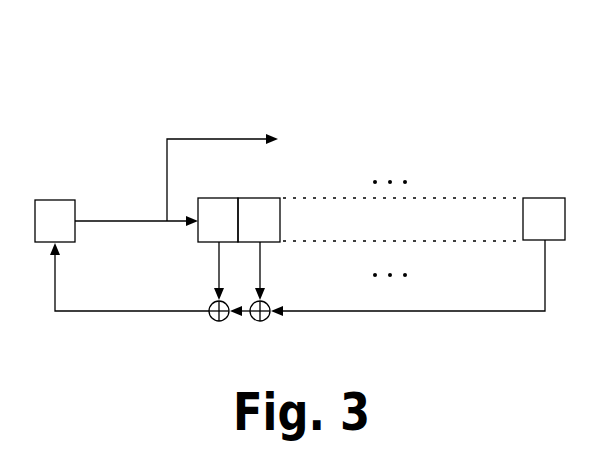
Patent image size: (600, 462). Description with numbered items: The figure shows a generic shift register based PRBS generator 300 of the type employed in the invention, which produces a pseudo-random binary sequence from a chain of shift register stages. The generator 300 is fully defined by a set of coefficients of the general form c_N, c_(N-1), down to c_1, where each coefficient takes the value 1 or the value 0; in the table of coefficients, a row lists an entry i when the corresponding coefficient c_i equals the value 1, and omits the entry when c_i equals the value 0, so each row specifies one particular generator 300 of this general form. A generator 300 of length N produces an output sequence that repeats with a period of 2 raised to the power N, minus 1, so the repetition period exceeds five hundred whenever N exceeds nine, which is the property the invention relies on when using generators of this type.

The shift register based PRBS generator 300 is at (300, 180).
The register stage 0 is at (55, 206).
The register stage 1 is at (218, 205).
The register stage 2 is at (259, 205).